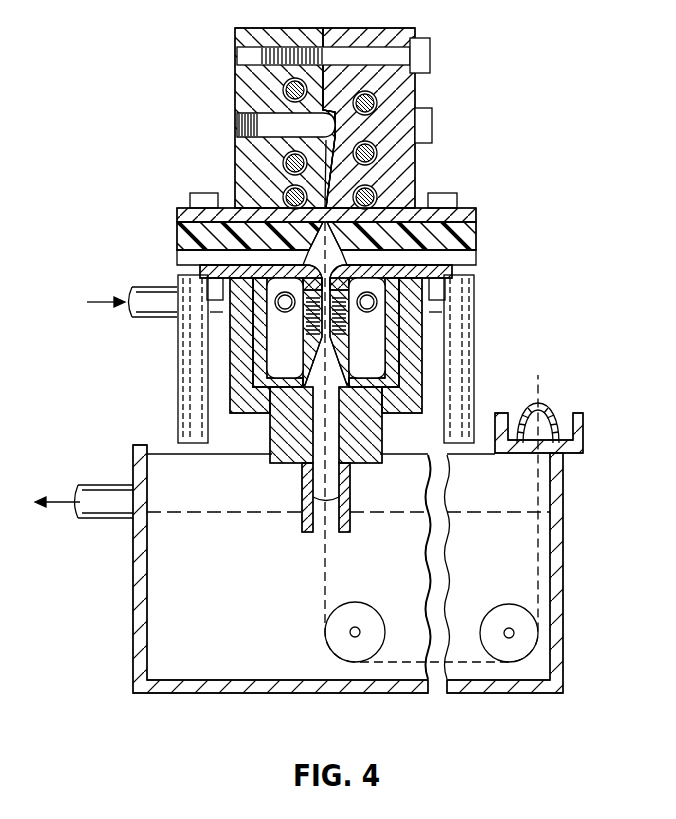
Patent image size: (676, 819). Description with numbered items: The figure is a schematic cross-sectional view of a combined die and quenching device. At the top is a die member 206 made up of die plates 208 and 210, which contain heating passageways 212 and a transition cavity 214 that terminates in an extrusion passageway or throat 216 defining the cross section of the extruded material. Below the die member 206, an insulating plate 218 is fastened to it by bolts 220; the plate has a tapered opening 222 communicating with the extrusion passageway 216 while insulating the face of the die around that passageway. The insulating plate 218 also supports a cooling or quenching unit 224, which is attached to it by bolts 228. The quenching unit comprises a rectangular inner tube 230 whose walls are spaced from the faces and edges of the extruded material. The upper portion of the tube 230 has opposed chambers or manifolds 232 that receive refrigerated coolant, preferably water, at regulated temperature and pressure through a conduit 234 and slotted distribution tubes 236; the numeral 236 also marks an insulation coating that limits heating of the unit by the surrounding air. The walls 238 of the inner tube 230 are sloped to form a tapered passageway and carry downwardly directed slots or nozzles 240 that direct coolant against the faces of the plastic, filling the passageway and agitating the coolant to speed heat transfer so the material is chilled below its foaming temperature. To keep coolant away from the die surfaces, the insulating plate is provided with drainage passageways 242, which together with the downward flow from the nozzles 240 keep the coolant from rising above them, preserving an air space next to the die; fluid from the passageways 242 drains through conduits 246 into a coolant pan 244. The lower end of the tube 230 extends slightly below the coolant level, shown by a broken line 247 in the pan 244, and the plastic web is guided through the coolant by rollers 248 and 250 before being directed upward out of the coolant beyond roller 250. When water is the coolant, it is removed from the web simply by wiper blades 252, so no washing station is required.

The die member 206 is at (440, 113).
The die plate 208 is at (247, 150).
The die plate 210 is at (403, 157).
The heating passageways 212 is at (380, 127).
The transition cavity 214 is at (333, 130).
The extrusion passageway 216 is at (340, 178).
The insulating plate 218 is at (478, 238).
The bolts 220 is at (200, 198).
The tapered opening 222 is at (472, 215).
The quenching unit 224 is at (493, 333).
The bolts 228 is at (215, 285).
The inner tube 230 is at (335, 496).
The manifolds 232 is at (270, 352).
The conduit 234 is at (140, 318).
The slotted distribution tubes 236 is at (260, 318).
The walls 238 is at (390, 378).
The nozzles 240 is at (284, 316).
The drainage passageways 242 is at (208, 258).
The coolant pan 244 is at (133, 632).
The conduits 246 is at (177, 398).
The coolant level 247 is at (507, 510).
The roller 248 is at (365, 650).
The roller 250 is at (500, 648).
The wiper blades 252 is at (545, 403).